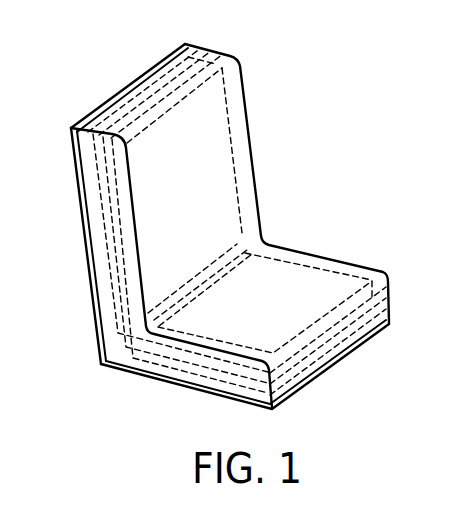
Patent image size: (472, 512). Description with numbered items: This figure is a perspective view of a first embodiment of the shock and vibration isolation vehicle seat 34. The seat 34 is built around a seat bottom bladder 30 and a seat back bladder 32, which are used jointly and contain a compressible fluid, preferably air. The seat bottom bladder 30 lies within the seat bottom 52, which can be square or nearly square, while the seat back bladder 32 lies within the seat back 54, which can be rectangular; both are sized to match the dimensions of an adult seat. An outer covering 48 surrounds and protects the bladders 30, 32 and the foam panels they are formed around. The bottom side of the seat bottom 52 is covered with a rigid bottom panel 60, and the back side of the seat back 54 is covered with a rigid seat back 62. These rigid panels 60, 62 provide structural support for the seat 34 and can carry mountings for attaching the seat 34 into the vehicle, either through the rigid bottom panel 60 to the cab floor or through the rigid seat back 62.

The seat bottom bladder 30 is at (320, 277).
The seat back bladder 32 is at (245, 88).
The vehicle seat 34 is at (187, 182).
The outer covering 48 is at (247, 137).
The seat bottom 52 is at (288, 280).
The seat back 54 is at (208, 127).
The rigid bottom panel 60 is at (205, 397).
The rigid seat back 62 is at (90, 318).